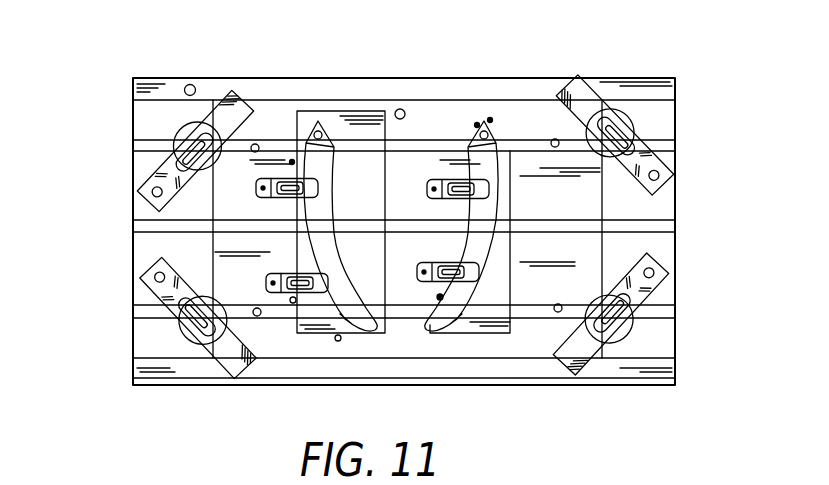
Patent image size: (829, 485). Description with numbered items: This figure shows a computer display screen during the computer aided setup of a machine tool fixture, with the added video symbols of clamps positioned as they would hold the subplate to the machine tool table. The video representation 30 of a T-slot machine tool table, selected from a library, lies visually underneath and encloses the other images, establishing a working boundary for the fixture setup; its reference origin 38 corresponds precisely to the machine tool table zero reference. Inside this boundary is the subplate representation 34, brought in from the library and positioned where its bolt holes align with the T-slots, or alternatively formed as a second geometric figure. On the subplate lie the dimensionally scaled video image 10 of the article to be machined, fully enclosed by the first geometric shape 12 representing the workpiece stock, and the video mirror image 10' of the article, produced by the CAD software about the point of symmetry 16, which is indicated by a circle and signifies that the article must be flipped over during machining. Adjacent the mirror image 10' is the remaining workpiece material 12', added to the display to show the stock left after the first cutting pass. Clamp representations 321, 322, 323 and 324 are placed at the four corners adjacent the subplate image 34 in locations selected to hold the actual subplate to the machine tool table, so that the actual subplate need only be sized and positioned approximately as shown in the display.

The video representation of a machine tool table 30 is at (676, 240).
The subplate representation 34 is at (510, 99).
The reference origin 38 is at (186, 84).
The point of symmetry 16 is at (403, 109).
The first geometric shape 12 is at (320, 183).
The remaining workpiece material 12' is at (501, 270).
The video image 10 is at (337, 271).
The video mirror image 10' is at (461, 271).
The clamp representation 321 is at (665, 164).
The clamp representation 322 is at (612, 330).
The clamp representation 323 is at (158, 167).
The clamp representation 324 is at (193, 347).